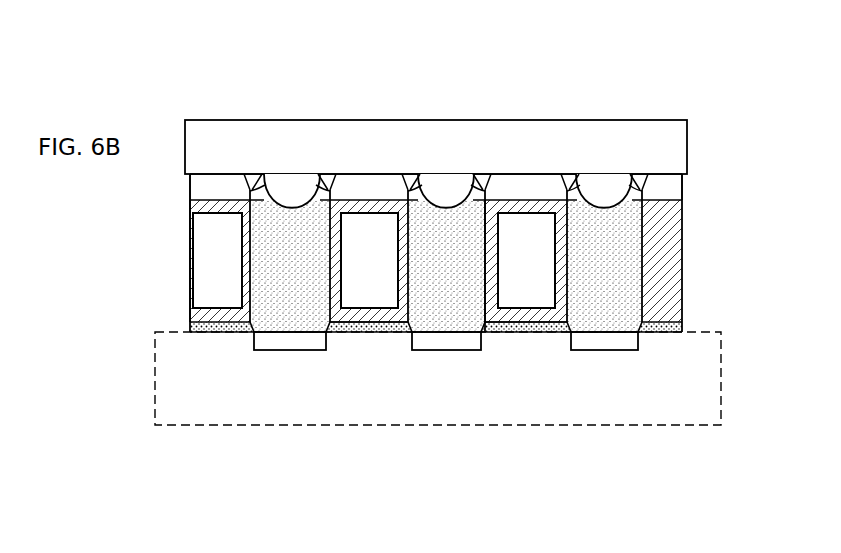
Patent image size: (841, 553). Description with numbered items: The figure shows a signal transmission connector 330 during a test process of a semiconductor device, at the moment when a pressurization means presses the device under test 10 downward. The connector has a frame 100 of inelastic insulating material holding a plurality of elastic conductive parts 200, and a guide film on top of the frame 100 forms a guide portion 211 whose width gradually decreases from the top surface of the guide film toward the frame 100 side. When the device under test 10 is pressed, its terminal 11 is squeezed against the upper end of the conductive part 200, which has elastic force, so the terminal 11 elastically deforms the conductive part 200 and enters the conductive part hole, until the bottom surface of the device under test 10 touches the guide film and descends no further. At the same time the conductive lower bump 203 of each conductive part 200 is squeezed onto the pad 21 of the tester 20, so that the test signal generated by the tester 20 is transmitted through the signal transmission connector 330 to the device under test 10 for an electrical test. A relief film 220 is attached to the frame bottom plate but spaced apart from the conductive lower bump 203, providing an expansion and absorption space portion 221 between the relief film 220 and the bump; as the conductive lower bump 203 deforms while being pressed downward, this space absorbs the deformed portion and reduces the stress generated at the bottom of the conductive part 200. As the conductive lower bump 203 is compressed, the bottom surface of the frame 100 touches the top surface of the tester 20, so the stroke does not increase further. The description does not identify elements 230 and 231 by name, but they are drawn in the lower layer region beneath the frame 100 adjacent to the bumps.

The device under test 10 is at (617, 97).
The terminal 11 is at (291, 186).
The tester 20 is at (141, 388).
The pad 21 is at (604, 343).
The frame 100 is at (670, 265).
The conductive part 200 is at (280, 243).
The conductive lower bump 203 is at (265, 335).
The guide portion 211 is at (484, 190).
The relief film 220 is at (670, 190).
The expansion and absorption space portion 221 is at (487, 334).
The lower insulating layer 230 is at (665, 328).
The lower insulating layer segment 231 is at (337, 334).
The signal transmission connector 330 is at (152, 283).